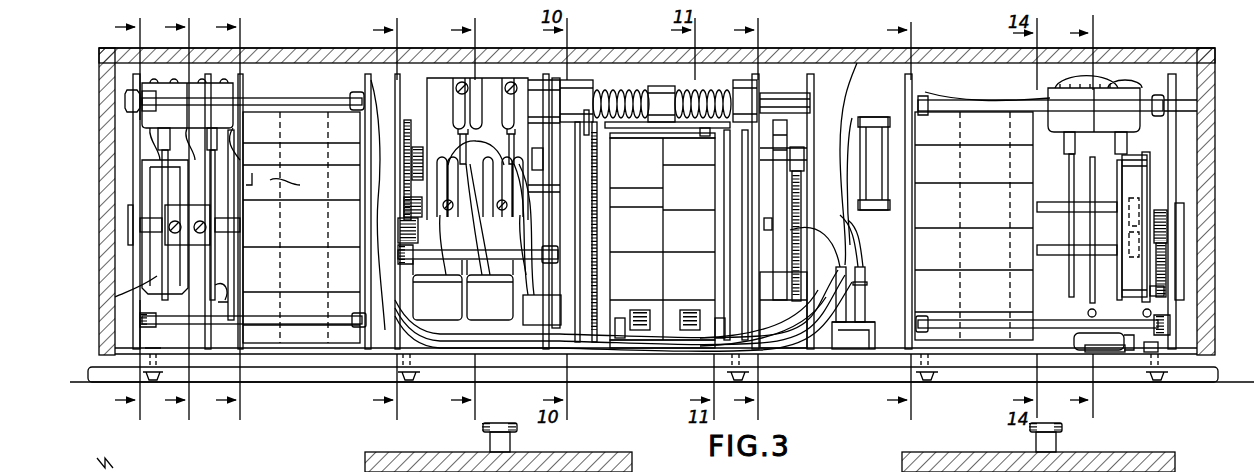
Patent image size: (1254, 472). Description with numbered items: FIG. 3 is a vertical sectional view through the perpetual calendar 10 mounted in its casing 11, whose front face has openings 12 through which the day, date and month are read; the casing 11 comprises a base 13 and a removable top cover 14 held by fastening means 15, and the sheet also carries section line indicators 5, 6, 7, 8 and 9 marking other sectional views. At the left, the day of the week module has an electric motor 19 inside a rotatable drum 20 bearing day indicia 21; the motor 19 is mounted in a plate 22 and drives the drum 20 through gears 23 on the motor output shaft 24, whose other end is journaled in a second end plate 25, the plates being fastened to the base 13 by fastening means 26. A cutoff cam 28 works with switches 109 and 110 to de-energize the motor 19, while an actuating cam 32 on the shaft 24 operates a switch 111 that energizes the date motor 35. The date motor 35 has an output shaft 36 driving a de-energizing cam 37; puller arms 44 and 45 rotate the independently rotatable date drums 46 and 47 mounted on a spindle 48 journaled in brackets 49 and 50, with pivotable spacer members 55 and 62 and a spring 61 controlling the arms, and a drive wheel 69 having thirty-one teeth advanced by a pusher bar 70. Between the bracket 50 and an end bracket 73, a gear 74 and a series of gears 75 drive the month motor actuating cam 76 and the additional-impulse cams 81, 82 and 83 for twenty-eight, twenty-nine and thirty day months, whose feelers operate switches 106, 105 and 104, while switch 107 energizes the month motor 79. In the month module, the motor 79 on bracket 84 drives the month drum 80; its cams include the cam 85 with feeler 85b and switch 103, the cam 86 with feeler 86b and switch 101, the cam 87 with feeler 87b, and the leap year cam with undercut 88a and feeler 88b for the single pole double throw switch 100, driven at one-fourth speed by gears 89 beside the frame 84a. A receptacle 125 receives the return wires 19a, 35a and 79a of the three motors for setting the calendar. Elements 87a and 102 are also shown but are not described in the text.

The section line 5- 5 is at (127, 213).
The section line 6- 6 is at (177, 214).
The section line 7- 7 is at (228, 214).
The section line 8- 8 is at (385, 216).
The section line 9- 9 is at (459, 217).
The perpetual calendar 10 is at (288, 46).
The casing 11 is at (99, 63).
The openings 12 is at (745, 215).
The base 13 is at (805, 398).
The top cover 14 is at (601, 48).
The fastening means 15 is at (490, 436).
The electric motor 19 is at (228, 279).
The return wire 19a is at (820, 274).
The rotatable drum 20 is at (280, 343).
The indicia 21 is at (305, 343).
The plate 22 is at (372, 380).
The gears 23 is at (273, 169).
The motor output shaft 24 is at (142, 222).
The second end plate 25 is at (133, 263).
The fastening means 26 is at (160, 370).
The cutoff cam 28 is at (115, 297).
The second actuating cam 32 is at (232, 322).
The date motor 35 is at (860, 117).
The return wire 35a is at (857, 63).
The output shaft 36 is at (800, 147).
The de-energizing cam 37 is at (776, 122).
The puller arm 44 is at (738, 100).
The second puller arm 45 is at (612, 132).
The right hand drum 46 is at (662, 332).
The left hand drum 47 is at (620, 332).
The spindle 48 is at (772, 228).
The bracket 49 is at (783, 310).
The bracket plate 50 is at (562, 327).
The pivotable spacer member 55 is at (733, 212).
The spring 61 is at (650, 348).
The pivotable spacer member 62 is at (600, 212).
The drive wheel 69 is at (615, 282).
The pusher bar 70 is at (657, 227).
The end bracket 73 is at (398, 104).
The gear 74 is at (537, 148).
The series of gears 75 is at (422, 160).
The month motor actuating cam 76 is at (437, 288).
The month motor 79 is at (880, 250).
The return wire 79a is at (880, 292).
The month drum 80 is at (958, 116).
The cam 81 is at (487, 218).
The cam 82 is at (490, 290).
The cam 83 is at (494, 346).
The bracket 84 is at (893, 325).
The frame 84a is at (1164, 98).
The cam 85 is at (1062, 272).
The feeler 85b is at (1067, 152).
The cam 86 is at (1090, 185).
The feeler 86b is at (1088, 312).
The cam 87 is at (1115, 296).
The contact arm 87a is at (1124, 170).
The feeler 87b is at (1124, 140).
The undercut 88a is at (1147, 178).
The feeler 88b is at (1164, 290).
The gears 89 is at (1170, 252).
The single pole double throw switch 100 is at (1148, 352).
The switch 101 is at (1108, 352).
The electromagnet 102 is at (1118, 95).
The switch 103 is at (1054, 95).
The switch 104 is at (490, 77).
The switch 105 is at (490, 297).
The switch 106 is at (440, 77).
The switch 107 is at (478, 282).
The switch 109 is at (148, 118).
The switch 110 is at (150, 178).
The switch 111 is at (215, 115).
The receptacle 125 is at (840, 352).